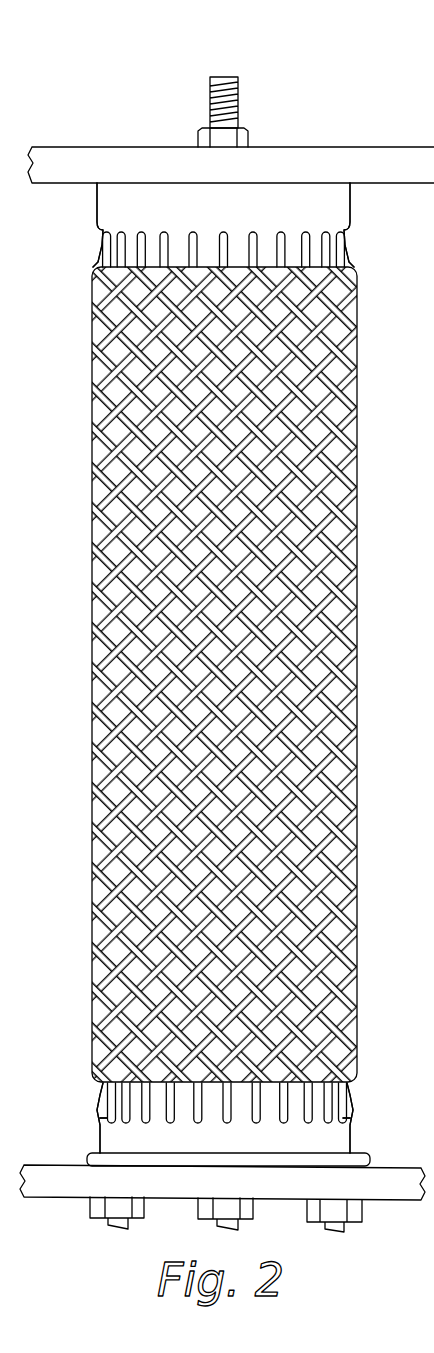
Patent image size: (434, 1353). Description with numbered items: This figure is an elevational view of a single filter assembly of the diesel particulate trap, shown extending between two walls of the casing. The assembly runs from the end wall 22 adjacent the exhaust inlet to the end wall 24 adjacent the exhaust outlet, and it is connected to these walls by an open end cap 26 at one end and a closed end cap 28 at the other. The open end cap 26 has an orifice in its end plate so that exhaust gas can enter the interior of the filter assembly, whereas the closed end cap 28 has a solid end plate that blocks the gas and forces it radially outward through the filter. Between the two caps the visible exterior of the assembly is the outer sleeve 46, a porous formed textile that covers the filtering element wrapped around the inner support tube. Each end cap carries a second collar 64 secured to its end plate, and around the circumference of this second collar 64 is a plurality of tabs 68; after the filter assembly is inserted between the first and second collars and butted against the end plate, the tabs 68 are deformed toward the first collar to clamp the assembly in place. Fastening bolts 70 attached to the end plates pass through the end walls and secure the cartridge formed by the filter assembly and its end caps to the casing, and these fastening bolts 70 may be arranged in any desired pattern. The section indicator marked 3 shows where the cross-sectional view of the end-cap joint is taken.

The section line 3- 3 is at (223, 65).
The end wall 22 is at (383, 1189).
The end wall 24 is at (303, 160).
The open end cap 26 is at (352, 1131).
The closed end cap 28 is at (185, 203).
The outer sleeve 46 is at (355, 392).
The second collar 64 is at (325, 206).
The tabs 68 is at (312, 250).
The fastening bolts 70 is at (210, 108).